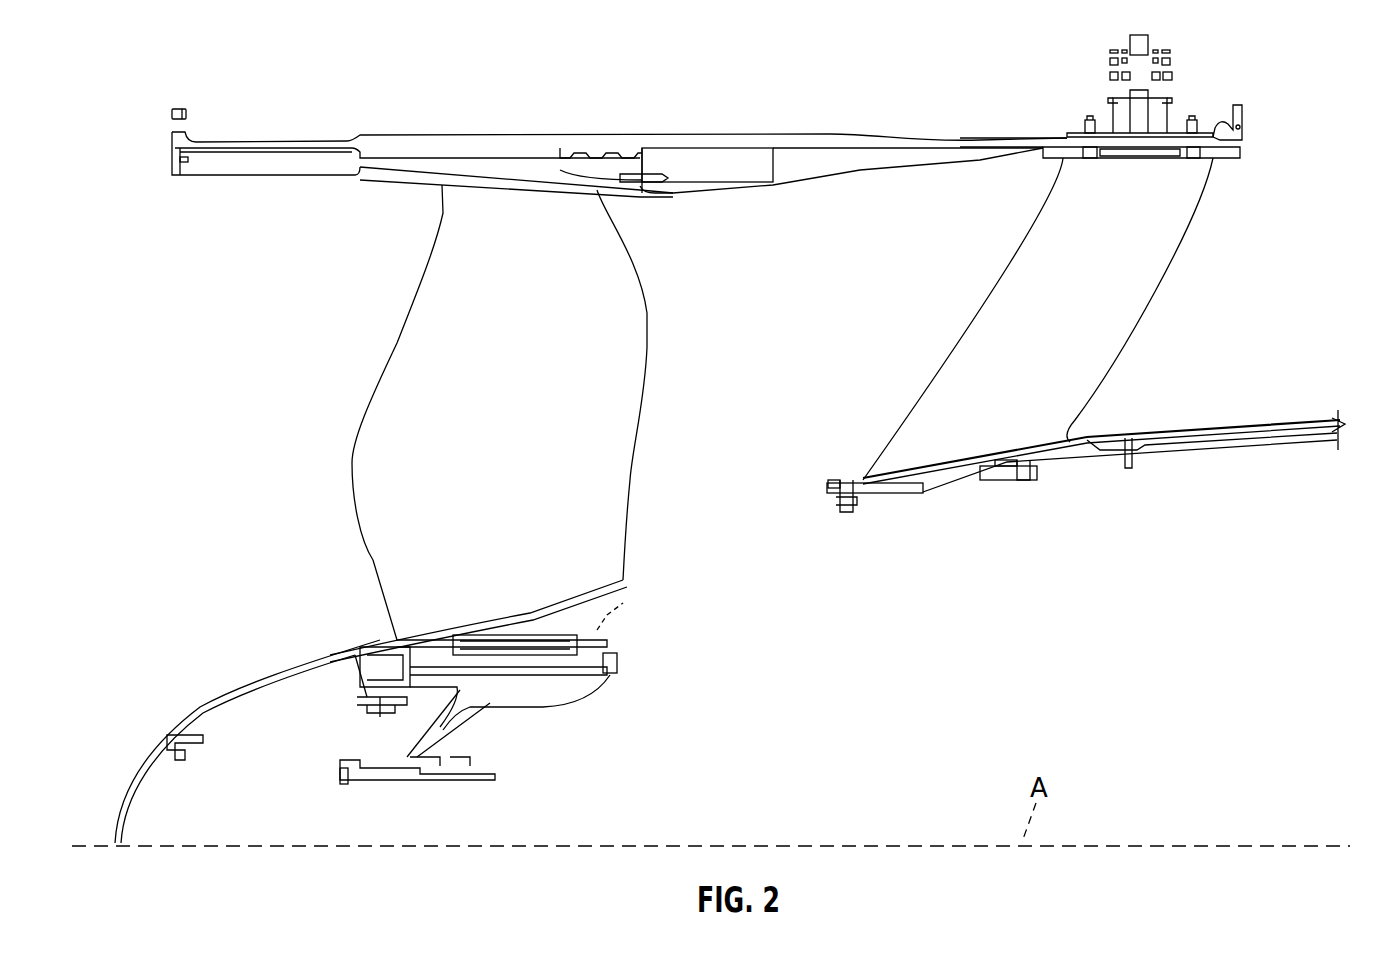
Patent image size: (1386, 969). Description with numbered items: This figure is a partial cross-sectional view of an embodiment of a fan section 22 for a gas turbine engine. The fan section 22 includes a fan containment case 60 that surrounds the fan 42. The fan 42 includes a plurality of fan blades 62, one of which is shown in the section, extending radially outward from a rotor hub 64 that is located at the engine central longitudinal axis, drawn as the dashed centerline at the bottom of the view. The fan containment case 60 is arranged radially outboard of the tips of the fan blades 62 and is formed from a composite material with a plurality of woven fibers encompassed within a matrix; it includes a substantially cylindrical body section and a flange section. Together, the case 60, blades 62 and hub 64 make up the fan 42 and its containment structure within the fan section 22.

The fan section 22 is at (198, 68).
The fan 42 is at (186, 417).
The fan containment case 60 is at (704, 142).
The fan blades 62 is at (529, 449).
The rotor hub 64 is at (355, 763).